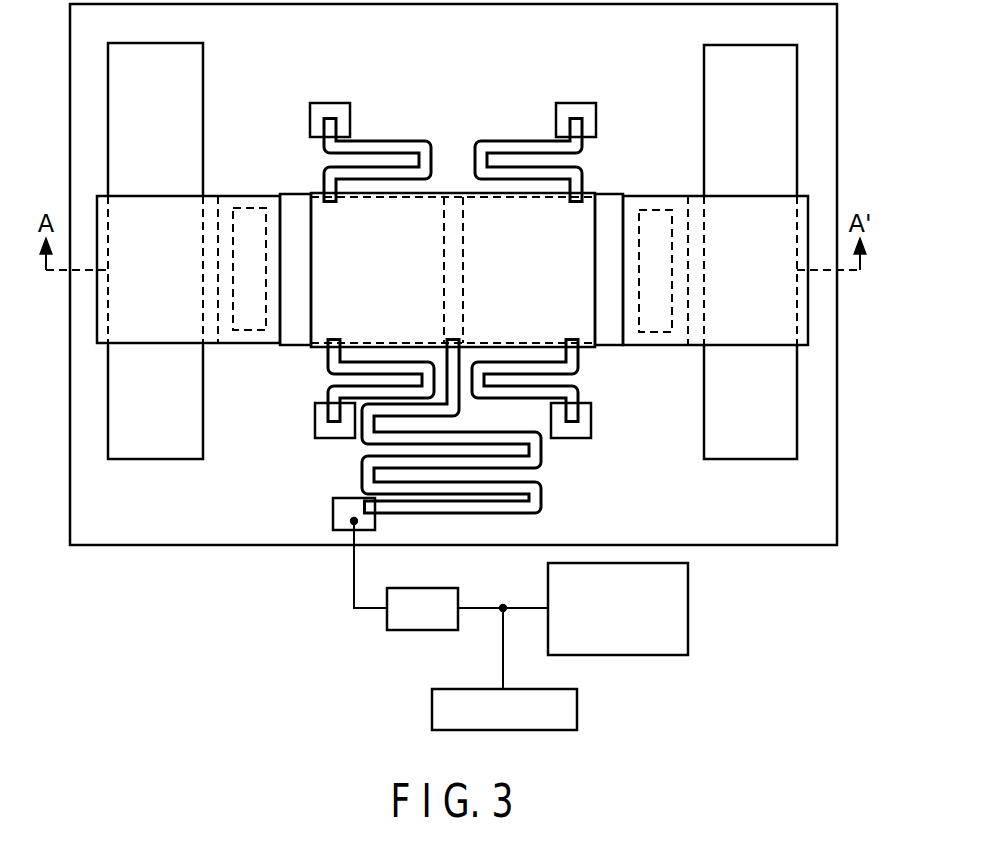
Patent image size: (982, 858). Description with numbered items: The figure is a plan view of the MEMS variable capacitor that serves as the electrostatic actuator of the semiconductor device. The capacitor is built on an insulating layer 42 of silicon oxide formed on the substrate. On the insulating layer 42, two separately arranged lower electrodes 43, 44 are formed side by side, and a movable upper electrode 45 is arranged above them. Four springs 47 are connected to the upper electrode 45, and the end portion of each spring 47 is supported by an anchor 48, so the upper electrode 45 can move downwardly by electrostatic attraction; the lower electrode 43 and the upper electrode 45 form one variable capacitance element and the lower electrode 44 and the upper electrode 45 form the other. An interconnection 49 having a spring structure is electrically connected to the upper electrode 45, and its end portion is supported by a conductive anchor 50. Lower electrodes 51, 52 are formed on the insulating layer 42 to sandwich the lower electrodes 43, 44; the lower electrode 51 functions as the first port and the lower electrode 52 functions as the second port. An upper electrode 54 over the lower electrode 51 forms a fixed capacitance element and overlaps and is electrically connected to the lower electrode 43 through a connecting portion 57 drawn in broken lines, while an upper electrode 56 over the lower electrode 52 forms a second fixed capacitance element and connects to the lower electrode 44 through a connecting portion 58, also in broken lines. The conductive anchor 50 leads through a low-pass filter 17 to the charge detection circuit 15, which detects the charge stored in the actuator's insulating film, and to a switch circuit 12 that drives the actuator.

The switch circuit 12 is at (578, 712).
The charge detection circuit 15 is at (689, 610).
The low-pass filter 17 is at (408, 631).
The insulating layer 42 is at (800, 533).
The lower electrode 43 is at (296, 200).
The lower electrode 44 is at (612, 207).
The upper electrode 45 is at (455, 195).
The spring 47 is at (398, 150).
The anchor 48 is at (330, 110).
The interconnection 49 is at (545, 498).
The conductive anchor 50 is at (334, 508).
The lower electrode 51 is at (155, 449).
The lower electrode 52 is at (748, 450).
The upper electrode 54 is at (97, 320).
The upper electrode 56 is at (808, 325).
The connecting portion 57 is at (242, 208).
The connecting portion 58 is at (655, 208).